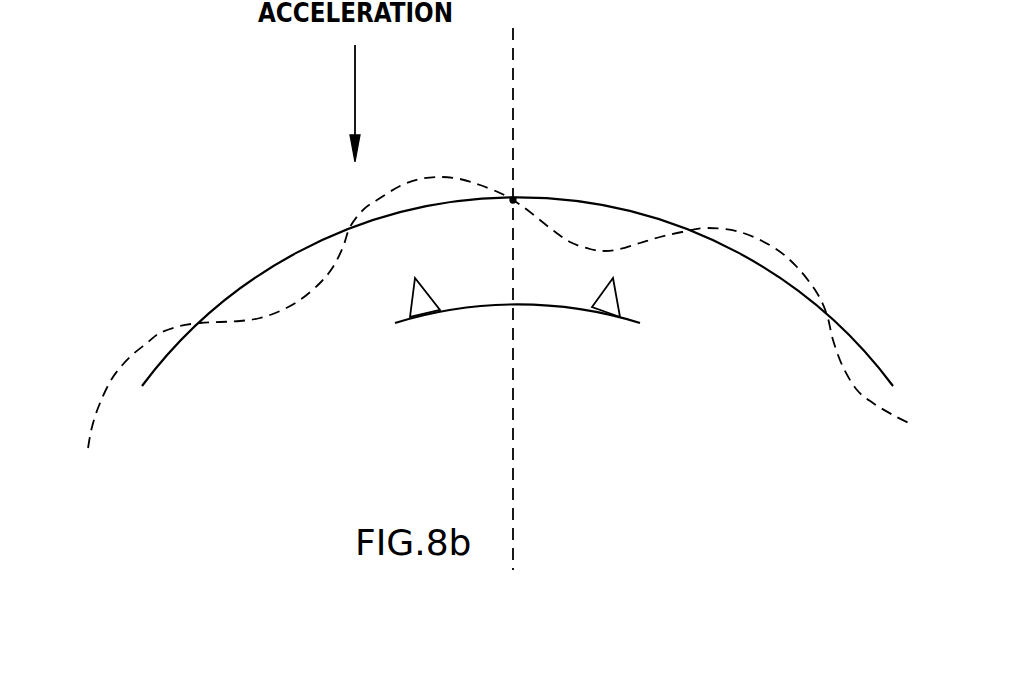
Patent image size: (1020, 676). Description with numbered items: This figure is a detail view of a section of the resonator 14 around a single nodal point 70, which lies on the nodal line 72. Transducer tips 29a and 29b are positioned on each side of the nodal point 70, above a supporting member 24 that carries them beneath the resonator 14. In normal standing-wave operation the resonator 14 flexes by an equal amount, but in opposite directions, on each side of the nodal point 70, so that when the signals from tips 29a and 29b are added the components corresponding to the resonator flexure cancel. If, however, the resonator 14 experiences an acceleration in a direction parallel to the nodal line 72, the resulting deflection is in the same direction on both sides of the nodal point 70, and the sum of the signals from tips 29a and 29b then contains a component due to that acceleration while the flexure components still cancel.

The resonator 14 is at (853, 340).
The reaction mass 24 is at (535, 303).
The transducer tip 29a is at (410, 300).
The transducer tip 29b is at (618, 293).
The nodal point 70 is at (515, 199).
The nodal line 72 is at (513, 52).